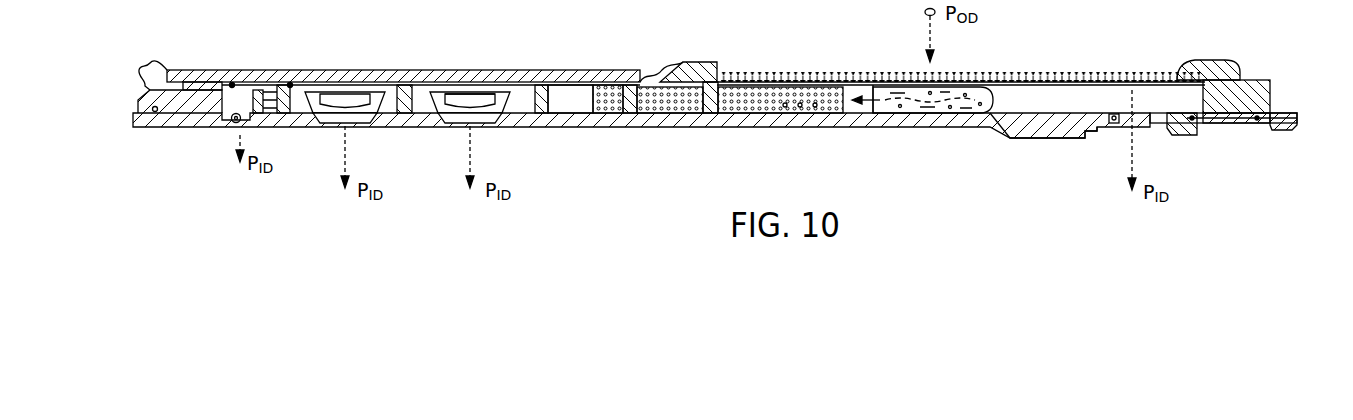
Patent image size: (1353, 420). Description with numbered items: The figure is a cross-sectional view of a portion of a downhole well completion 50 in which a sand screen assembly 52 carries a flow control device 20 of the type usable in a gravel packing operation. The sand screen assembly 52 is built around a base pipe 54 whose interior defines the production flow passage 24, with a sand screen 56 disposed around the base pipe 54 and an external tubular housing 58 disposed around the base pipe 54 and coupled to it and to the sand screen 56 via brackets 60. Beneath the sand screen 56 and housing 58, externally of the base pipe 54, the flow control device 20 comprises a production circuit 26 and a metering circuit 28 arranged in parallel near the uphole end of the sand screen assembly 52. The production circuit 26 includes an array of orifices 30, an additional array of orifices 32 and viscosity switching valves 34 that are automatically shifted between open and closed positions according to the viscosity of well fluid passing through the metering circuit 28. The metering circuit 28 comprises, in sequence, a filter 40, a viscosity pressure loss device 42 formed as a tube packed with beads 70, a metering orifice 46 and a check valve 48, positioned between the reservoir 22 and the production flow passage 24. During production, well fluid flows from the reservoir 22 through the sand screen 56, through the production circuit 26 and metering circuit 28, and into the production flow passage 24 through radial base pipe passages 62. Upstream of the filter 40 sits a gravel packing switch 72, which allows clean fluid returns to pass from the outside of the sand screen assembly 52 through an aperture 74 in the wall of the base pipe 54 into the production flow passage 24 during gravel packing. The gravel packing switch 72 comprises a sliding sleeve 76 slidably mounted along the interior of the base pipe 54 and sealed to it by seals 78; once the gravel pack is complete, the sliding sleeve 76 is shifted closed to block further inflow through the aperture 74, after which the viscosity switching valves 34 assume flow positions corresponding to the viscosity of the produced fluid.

The flow control device 20 is at (1036, 80).
The reservoir 22 is at (869, 53).
The interior production flow passage 24 is at (202, 166).
The production circuit 26 is at (548, 101).
The metering circuit 28 is at (1004, 98).
The array of orifices 30 is at (538, 84).
The additional array of orifices 32 is at (400, 84).
The viscosity switching valve 34 is at (333, 86).
The filter 40 is at (935, 112).
The viscosity pressure loss device 42 is at (760, 110).
The metering orifice 46 is at (257, 95).
The check valve 48 is at (237, 112).
The downhole well completion 50 is at (1280, 140).
The sand screen assembly 52 is at (1126, 63).
The base pipe 54 is at (567, 115).
The sand screen 56 is at (803, 72).
The external tubular housing 58 is at (470, 88).
The bracket 60 is at (160, 68).
The radial base pipe passage 62 is at (328, 124).
The beads 70 is at (815, 108).
The gravel packing switch 72 is at (1222, 140).
The aperture 74 is at (1113, 124).
The sliding sleeve 76 is at (1185, 137).
The seal 78 is at (1257, 118).